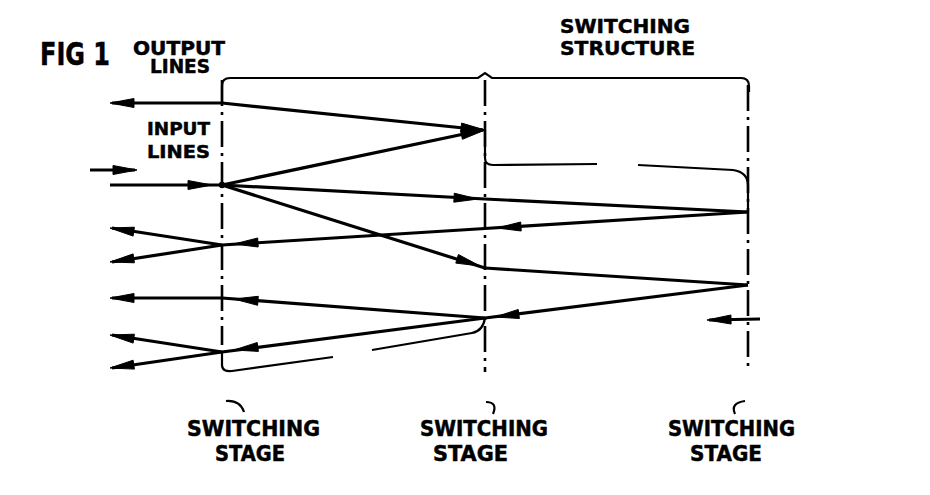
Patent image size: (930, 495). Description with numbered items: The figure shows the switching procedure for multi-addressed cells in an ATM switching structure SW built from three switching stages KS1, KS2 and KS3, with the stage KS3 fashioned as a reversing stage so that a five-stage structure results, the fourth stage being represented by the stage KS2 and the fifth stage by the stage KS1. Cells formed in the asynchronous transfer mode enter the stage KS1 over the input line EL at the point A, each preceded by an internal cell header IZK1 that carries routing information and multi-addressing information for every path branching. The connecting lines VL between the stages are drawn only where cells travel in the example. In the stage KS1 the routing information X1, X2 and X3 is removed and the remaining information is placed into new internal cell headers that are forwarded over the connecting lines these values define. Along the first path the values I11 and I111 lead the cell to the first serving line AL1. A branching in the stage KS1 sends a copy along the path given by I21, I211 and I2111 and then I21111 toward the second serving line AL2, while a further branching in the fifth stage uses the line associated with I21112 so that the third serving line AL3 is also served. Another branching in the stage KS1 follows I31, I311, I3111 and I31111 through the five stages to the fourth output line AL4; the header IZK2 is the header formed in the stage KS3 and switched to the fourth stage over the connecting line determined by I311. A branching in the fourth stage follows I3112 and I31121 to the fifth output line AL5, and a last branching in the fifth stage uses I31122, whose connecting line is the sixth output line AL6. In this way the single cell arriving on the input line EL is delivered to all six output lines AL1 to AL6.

The first switching stage KS1 is at (231, 240).
The second switching stage KS2 is at (495, 240).
The third switching stage KS3 is at (744, 242).
The switching structure SW is at (485, 76).
The connecting line VL is at (485, 250).
The first output line AL1 is at (166, 93).
The second output line AL2 is at (166, 229).
The third output line AL3 is at (166, 263).
The fourth output line AL4 is at (166, 309).
The fifth output line AL5 is at (166, 339).
The sixth output line AL6 is at (166, 369).
The input line EL is at (166, 175).
The input node A is at (232, 171).
The internal cell header of the communication system IZK1 is at (72, 162).
The internal cell header of the communication system IZK2 is at (788, 336).
The routing information x111 I111 is at (57, 97).
The routing information x21111 I21111 is at (66, 220).
The output line identifier I21112 is at (66, 258).
The routing information x31111 I31111 is at (66, 293).
The routing information x31121 I31121 is at (66, 328).
The routing information x31122 I31122 is at (66, 365).
The routing information x11 I11 is at (353, 112).
The routing information x21 I21 is at (616, 192).
The routing information x31 I31 is at (616, 263).
The routing information x211 I211 is at (616, 231).
The routing information x311 I311 is at (616, 306).
The routing information x2111 I2111 is at (353, 250).
The routing information x3111 I3111 is at (353, 299).
The routing information x3112 I3112 is at (353, 333).
The routing information x1 X1 is at (353, 157).
The routing information x2 X2 is at (353, 183).
The routing information x3 X3 is at (353, 226).